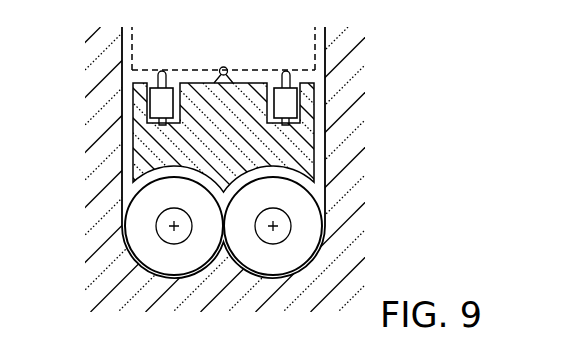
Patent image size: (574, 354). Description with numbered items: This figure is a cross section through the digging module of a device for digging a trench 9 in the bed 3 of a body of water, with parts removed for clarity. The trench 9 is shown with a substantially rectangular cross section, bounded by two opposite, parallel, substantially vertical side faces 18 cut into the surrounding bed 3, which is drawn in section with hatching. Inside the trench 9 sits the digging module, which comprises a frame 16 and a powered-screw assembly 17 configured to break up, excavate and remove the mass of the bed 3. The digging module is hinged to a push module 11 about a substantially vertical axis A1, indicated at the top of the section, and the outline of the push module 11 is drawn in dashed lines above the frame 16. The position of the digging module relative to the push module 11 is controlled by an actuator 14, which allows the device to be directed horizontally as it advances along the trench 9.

The bed 3 is at (287, 177).
The trench 9 is at (327, 57).
The push module 11 is at (259, 67).
The actuator 14 is at (150, 101).
The frame 16 is at (296, 144).
The powered-screw assembly 17 is at (79, 281).
The side faces 18 is at (113, 148).
The vertical axis A1 is at (222, 66).